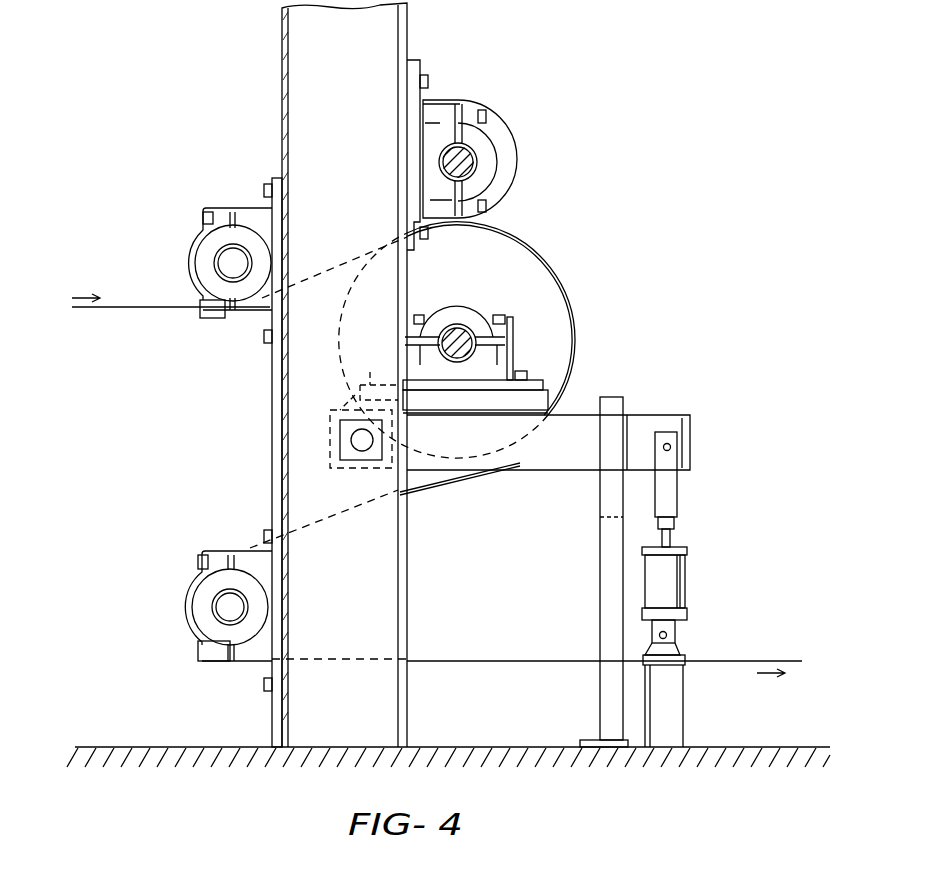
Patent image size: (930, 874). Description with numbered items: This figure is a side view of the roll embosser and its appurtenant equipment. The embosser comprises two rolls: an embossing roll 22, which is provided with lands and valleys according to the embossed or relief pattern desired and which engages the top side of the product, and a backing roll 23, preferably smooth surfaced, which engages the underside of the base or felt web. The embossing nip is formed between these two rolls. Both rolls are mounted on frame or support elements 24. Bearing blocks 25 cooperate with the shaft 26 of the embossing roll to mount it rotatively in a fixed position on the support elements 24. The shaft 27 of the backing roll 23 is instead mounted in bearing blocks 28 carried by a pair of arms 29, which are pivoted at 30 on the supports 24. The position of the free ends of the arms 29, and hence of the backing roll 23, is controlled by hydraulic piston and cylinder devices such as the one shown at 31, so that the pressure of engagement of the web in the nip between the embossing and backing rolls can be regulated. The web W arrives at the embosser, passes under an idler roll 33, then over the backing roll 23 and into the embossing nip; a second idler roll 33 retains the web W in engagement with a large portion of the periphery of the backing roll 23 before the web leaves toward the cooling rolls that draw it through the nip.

The embossing roll 22 is at (498, 118).
The backing roll 23 is at (510, 252).
The support elements 24 is at (387, 33).
The bearing blocks 25 is at (440, 132).
The shaft 26 is at (462, 160).
The shaft 27 is at (465, 336).
The bearing blocks 28 is at (482, 368).
The arms 29 is at (565, 457).
The pivot 30 is at (352, 436).
The hydraulic piston and cylinder device 31 is at (670, 579).
The idler roll 33 is at (198, 250).
The web W is at (147, 307).